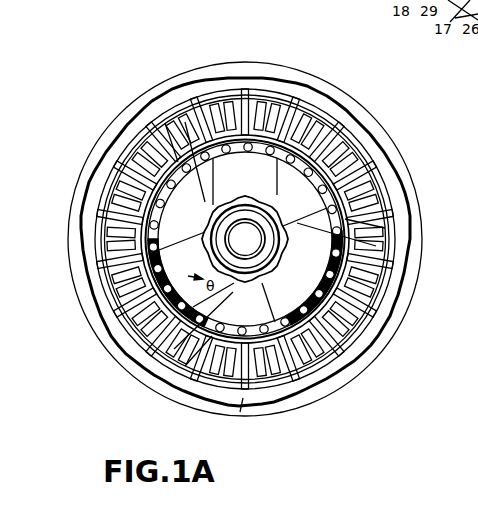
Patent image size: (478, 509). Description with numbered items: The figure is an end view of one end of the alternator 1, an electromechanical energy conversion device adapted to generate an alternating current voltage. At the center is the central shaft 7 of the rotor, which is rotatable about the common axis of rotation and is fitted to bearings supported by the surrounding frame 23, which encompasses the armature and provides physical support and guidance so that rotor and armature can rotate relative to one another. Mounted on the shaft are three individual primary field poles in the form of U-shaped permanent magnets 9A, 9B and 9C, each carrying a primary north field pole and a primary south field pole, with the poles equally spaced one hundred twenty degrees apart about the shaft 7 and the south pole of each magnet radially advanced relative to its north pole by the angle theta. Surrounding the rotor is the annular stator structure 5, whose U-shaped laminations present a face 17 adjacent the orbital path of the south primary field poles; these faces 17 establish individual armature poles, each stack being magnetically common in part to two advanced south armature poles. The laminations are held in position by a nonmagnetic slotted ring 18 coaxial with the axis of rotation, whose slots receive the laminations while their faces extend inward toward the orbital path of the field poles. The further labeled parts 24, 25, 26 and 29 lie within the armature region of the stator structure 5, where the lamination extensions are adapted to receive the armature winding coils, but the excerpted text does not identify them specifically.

The alternator 1 is at (405, 383).
The annular stator structure 5 is at (302, 90).
The central shaft 7 is at (252, 248).
The U-shaped permanent magnet 9A is at (261, 189).
The U-shaped permanent magnet 9B is at (198, 259).
The U-shaped permanent magnet 9C is at (303, 288).
The face 17 is at (150, 207).
The slotted ring 18 is at (243, 400).
The frame 23 is at (160, 80).
The coil 24 is at (134, 160).
The coil 25 is at (226, 100).
The stator tooth 26 is at (128, 183).
The support ring 29 is at (383, 217).